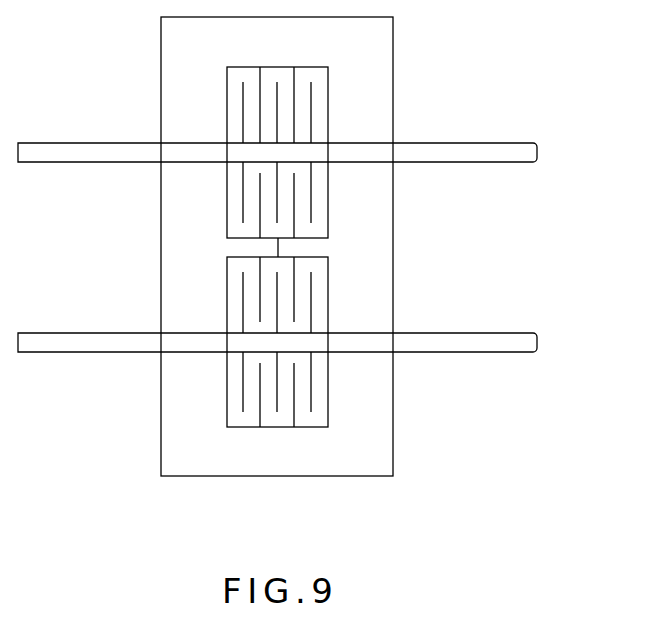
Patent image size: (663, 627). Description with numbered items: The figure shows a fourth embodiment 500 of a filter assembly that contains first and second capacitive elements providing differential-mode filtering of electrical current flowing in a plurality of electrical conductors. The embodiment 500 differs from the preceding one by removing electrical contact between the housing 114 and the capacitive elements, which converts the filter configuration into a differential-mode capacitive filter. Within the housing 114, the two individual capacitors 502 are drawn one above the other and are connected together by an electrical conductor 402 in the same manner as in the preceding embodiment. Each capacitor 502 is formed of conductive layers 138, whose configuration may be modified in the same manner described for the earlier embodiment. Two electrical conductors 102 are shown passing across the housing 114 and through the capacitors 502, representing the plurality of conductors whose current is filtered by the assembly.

The optical fiber / lead 102 is at (538, 342).
The housing 114 is at (367, 476).
The conductive layers 138 is at (226, 210).
The electrical conductor 402 is at (280, 247).
The embodiment of filter assembly 500 is at (188, 508).
The individual capacitors 502 is at (282, 256).